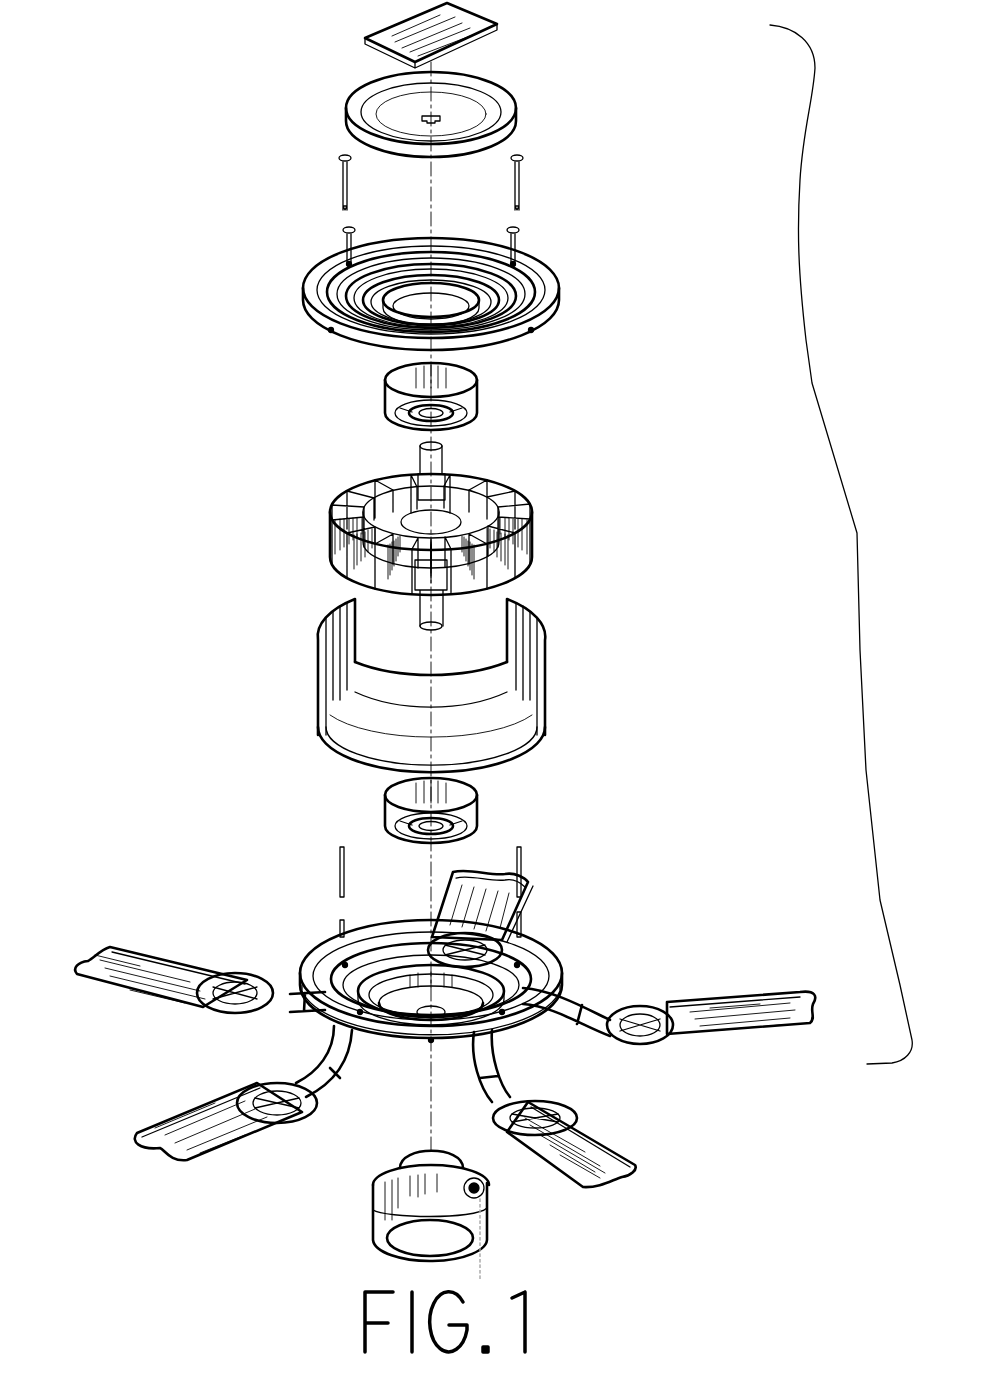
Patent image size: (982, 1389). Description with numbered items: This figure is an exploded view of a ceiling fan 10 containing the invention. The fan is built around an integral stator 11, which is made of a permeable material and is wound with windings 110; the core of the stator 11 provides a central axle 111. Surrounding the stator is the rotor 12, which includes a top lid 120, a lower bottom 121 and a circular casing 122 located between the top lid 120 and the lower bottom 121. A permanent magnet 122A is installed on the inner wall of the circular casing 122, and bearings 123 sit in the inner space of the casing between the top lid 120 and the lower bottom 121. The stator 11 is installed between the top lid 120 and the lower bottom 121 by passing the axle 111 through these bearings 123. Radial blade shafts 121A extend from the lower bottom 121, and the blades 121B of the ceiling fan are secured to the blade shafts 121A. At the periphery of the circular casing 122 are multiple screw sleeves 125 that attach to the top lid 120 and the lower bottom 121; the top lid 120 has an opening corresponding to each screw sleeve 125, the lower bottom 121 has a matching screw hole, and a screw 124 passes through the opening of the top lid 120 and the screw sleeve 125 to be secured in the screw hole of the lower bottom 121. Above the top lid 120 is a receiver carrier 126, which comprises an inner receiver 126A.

The ceiling fan 10 is at (242, 448).
The integral stator 11 is at (297, 565).
The windings 110 is at (340, 582).
The central axle 111 is at (418, 458).
The rotor 12 is at (841, 544).
The top lid 120 is at (547, 292).
The lower bottom 121 is at (557, 953).
The blade shafts 121A is at (615, 1002).
The blades 121B is at (785, 993).
The circular casing 122 is at (528, 672).
The permanent magnet 122A is at (498, 713).
The bearings 123 is at (477, 397).
The screw 124 is at (521, 187).
The screw sleeves 125 is at (522, 876).
The receiver carrier 126 is at (520, 95).
The inner receiver 126A is at (308, 50).